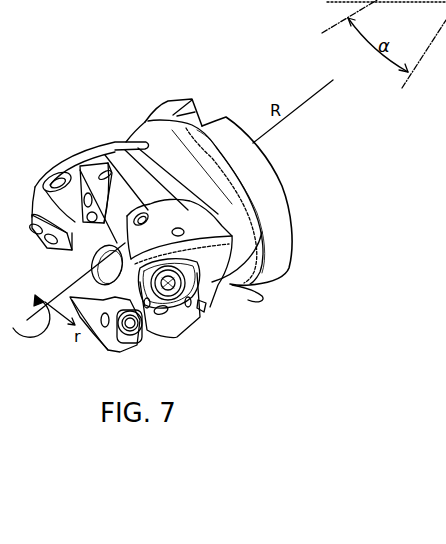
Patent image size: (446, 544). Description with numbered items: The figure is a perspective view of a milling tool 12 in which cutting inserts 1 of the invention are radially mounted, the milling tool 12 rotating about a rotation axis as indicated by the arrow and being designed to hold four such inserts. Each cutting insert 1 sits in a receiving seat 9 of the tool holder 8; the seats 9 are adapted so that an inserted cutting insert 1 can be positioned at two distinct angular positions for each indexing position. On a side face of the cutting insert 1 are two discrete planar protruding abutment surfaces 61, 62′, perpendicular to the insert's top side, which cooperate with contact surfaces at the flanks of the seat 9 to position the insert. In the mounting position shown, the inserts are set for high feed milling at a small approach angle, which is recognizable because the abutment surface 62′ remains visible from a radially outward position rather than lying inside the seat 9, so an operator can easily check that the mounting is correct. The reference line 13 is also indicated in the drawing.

The milling tool 12 is at (117, 91).
The reference line 13 is at (372, 6).
The tool holder 8 is at (212, 258).
The seat 9 is at (220, 272).
The cutting insert 1 is at (203, 305).
The abutment surface 61 is at (162, 313).
The abutment surface 62′ is at (202, 308).